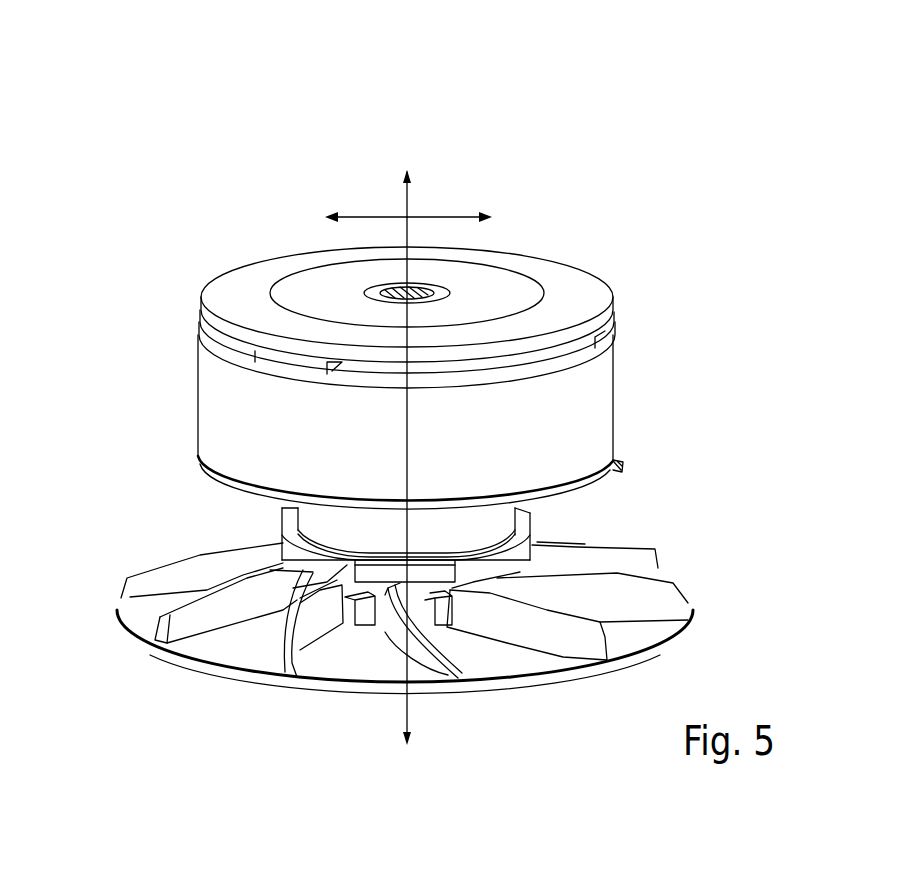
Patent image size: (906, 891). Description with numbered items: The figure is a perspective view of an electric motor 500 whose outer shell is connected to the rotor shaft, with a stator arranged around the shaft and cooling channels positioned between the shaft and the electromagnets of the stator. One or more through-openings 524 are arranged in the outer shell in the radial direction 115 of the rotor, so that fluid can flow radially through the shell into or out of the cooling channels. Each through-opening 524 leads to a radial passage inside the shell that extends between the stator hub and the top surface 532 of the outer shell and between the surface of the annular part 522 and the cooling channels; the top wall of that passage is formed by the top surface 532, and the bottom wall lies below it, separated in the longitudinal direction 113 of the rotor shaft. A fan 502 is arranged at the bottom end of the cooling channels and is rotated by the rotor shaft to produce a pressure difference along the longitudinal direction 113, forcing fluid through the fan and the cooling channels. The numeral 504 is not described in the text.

The electric motor 500 is at (387, 374).
The fan 502 is at (210, 539).
The housing 504 is at (200, 302).
The annular part 522 is at (405, 422).
The through-opening 524 is at (197, 330).
The top surface 532 is at (272, 258).
The longitudinal direction 113 is at (404, 206).
The radial direction 115 is at (433, 213).